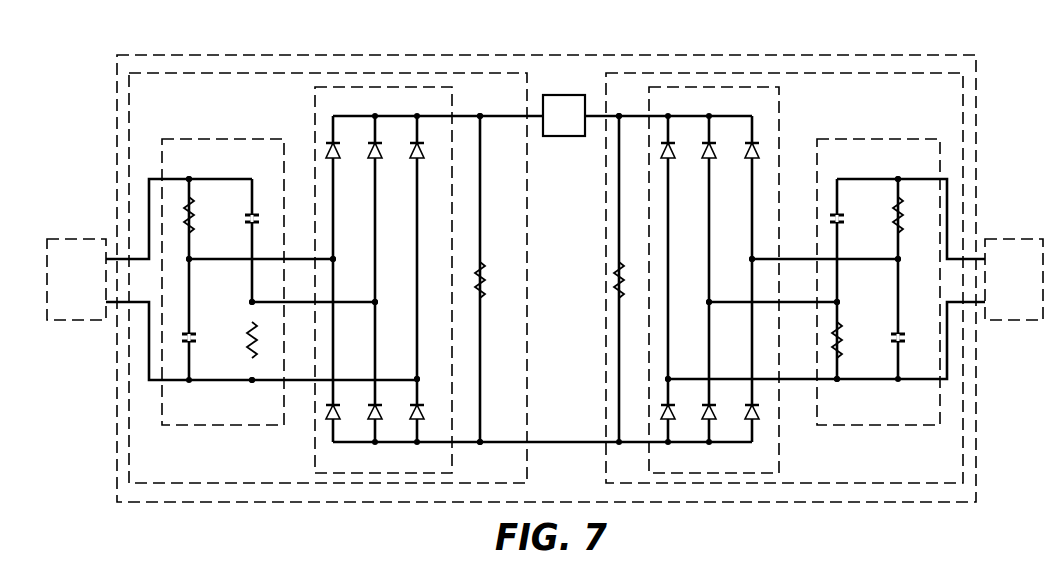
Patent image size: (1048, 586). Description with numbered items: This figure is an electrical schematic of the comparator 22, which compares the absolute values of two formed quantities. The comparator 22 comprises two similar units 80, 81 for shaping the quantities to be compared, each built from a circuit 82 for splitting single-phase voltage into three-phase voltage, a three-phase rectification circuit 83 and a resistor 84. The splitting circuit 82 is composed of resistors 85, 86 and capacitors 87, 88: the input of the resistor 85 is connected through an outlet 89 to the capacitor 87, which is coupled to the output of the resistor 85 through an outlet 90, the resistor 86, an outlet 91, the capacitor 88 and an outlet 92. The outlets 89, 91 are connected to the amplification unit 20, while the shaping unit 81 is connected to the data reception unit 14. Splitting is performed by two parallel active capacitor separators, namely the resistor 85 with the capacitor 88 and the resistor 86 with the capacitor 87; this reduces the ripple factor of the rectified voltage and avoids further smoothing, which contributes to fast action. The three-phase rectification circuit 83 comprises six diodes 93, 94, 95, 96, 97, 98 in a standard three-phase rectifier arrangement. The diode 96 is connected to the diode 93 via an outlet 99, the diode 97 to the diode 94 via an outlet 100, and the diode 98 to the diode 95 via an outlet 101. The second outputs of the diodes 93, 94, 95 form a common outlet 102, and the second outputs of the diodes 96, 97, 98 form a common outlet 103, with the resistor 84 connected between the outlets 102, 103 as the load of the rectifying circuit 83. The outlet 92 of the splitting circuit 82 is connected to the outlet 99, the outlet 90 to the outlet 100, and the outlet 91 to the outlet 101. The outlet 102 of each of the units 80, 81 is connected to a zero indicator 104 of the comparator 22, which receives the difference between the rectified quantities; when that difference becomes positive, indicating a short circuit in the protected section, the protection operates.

The data reception unit 14 is at (1018, 237).
The amplification unit 20 is at (80, 237).
The comparator 22 is at (178, 53).
The unit for shaping quantities to be compared 80 is at (273, 71).
The unit for shaping quantities to be compared 81 is at (795, 71).
The circuit for splitting single-phase voltage into three-phase voltage 82 is at (230, 137).
The three-phase rectification circuit 83 is at (422, 85).
The resistor 84 is at (486, 280).
The resistor 85 is at (193, 220).
The resistor 86 is at (248, 347).
The capacitor 87 is at (257, 216).
The capacitor 88 is at (197, 337).
The outlet 89 is at (191, 178).
The outlet 90 is at (253, 301).
The outlet 91 is at (252, 382).
The outlet 92 is at (190, 261).
The diode 93 is at (336, 156).
The diode 94 is at (378, 156).
The diode 95 is at (420, 156).
The diode 96 is at (336, 408).
The diode 97 is at (378, 408).
The diode 98 is at (420, 408).
The outlet 99 is at (335, 258).
The outlet 100 is at (377, 301).
The outlet 101 is at (416, 378).
The common outlet 102 is at (481, 115).
The common outlet 103 is at (481, 441).
The zero indicator 104 is at (564, 115).